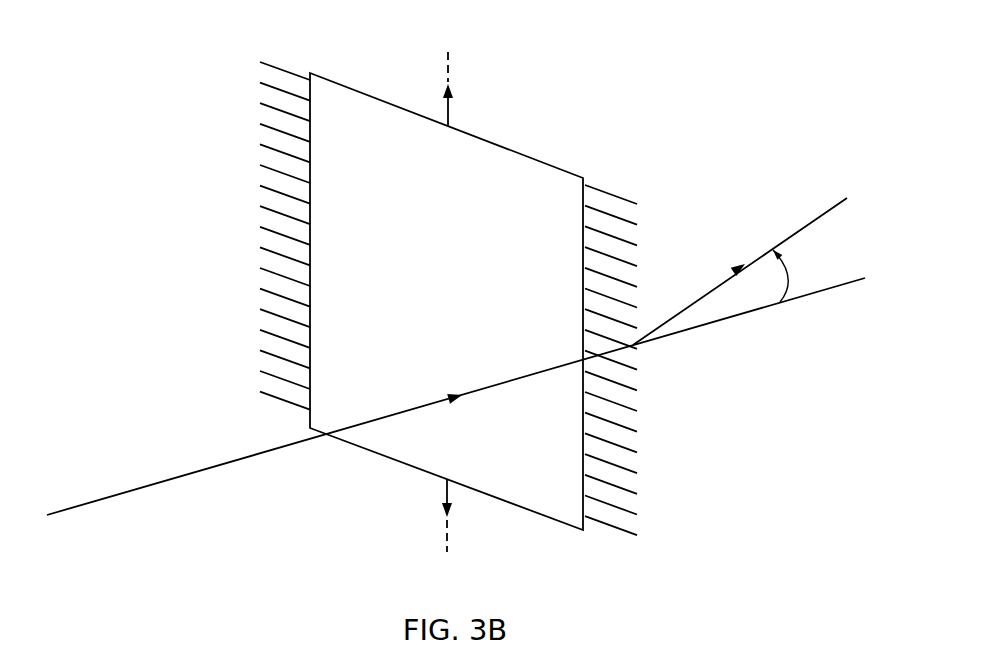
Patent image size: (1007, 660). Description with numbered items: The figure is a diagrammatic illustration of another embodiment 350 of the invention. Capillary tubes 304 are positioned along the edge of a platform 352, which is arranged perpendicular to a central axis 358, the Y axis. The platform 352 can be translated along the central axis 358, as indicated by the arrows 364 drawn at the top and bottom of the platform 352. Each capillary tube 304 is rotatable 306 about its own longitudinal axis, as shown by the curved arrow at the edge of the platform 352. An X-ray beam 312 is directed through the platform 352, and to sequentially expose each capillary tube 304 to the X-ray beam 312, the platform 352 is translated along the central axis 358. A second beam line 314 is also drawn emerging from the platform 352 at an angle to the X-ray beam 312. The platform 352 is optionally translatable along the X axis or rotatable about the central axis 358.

The embodiment 350 is at (106, 156).
The platform 352 is at (446, 301).
The capillary tubes 304 is at (260, 330).
The rotation of capillary tube 306 is at (626, 216).
The X-ray beam 312 is at (125, 492).
The deflected light beam 314 is at (813, 222).
The central axis 358 is at (452, 54).
The arrows 364 is at (452, 110).